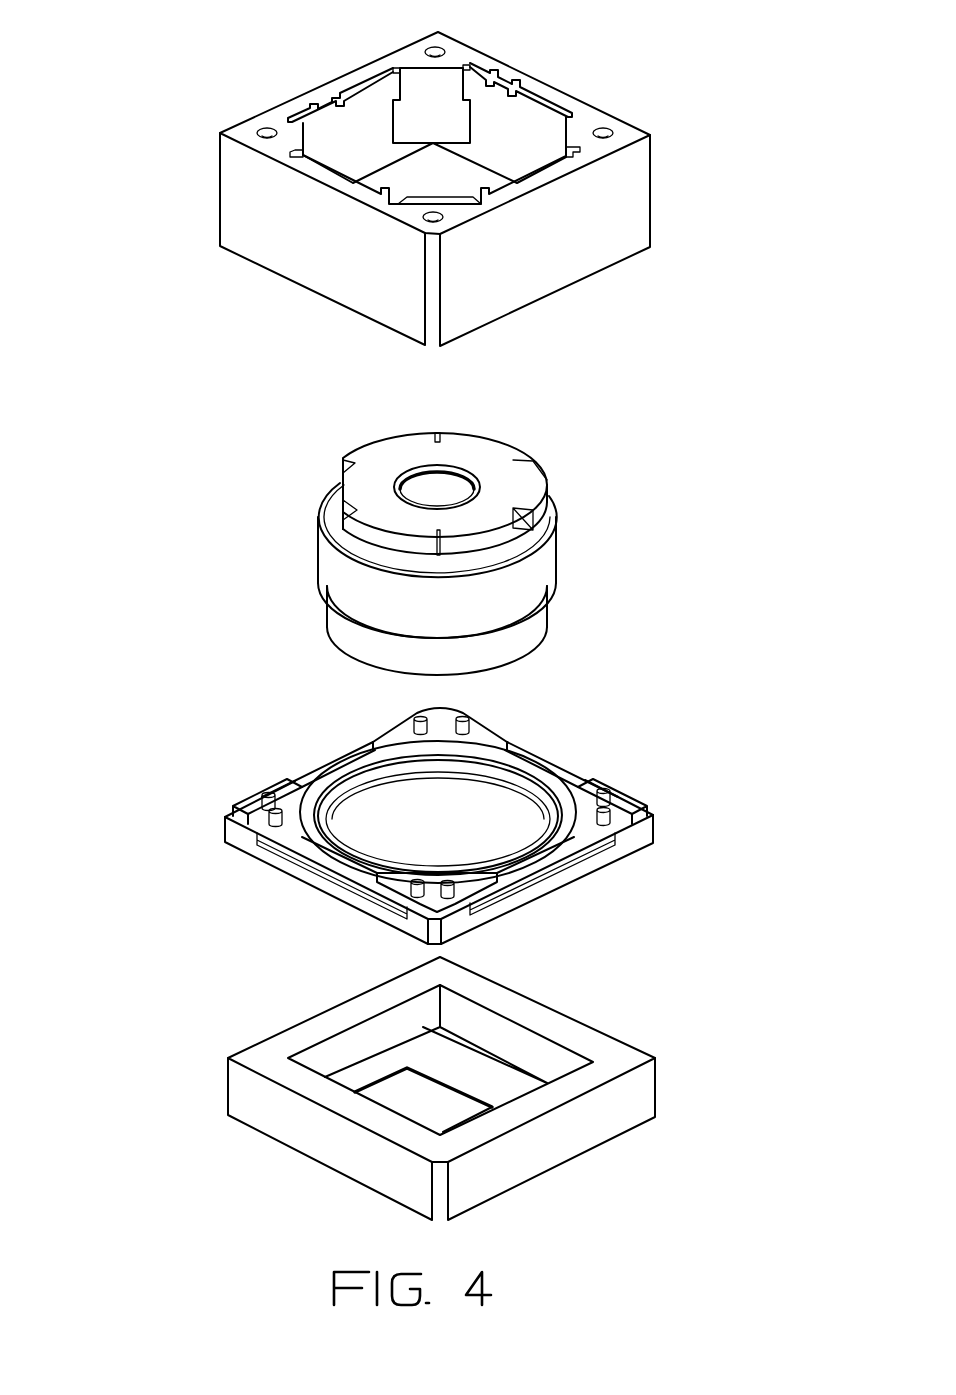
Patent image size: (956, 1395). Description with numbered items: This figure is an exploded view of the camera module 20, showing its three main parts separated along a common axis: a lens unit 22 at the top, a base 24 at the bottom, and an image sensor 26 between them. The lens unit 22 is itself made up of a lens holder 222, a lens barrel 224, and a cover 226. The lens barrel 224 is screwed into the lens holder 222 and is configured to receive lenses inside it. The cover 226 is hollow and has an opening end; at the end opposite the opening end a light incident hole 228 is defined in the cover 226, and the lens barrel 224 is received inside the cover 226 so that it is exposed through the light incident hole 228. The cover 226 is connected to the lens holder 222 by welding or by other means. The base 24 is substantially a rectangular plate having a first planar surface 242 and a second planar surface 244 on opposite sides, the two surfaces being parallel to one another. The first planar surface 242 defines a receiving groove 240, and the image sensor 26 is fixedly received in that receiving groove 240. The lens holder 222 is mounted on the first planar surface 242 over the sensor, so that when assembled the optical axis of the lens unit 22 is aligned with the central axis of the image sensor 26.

The camera module 20 is at (272, 36).
The lens unit 22 is at (135, 355).
The lens holder 222 is at (397, 738).
The lens barrel 224 is at (333, 567).
The cover 226 is at (333, 272).
The light incident hole 228 is at (533, 97).
The base 24 is at (120, 1010).
The receiving groove 240 is at (512, 1035).
The first planar surface 242 is at (260, 1058).
The second planar surface 244 is at (253, 1131).
The image sensor 26 is at (402, 1093).